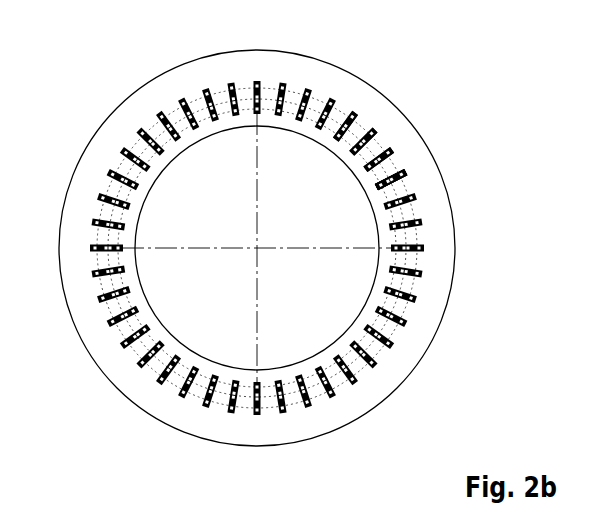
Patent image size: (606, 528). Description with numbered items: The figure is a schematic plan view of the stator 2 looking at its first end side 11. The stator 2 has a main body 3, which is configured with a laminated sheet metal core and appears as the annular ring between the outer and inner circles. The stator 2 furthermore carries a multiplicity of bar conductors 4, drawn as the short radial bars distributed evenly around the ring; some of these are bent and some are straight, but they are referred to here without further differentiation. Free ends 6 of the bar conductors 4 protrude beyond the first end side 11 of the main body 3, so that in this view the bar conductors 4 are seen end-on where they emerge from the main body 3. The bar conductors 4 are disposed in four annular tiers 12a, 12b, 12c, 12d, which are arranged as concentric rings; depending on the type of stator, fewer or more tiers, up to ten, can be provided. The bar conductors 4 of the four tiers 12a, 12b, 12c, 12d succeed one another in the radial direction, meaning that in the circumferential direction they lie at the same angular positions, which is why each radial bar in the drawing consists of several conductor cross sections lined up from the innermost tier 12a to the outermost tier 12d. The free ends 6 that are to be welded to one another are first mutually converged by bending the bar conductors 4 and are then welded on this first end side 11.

The stator 2 is at (121, 412).
The main body 3 is at (453, 288).
The bar conductors 4 is at (403, 168).
The free ends 6 is at (391, 179).
The first end side 11 is at (174, 80).
The annular tier 12a is at (372, 176).
The annular tier 12b is at (357, 165).
The annular tier 12c is at (357, 130).
The annular tier 12d is at (338, 103).